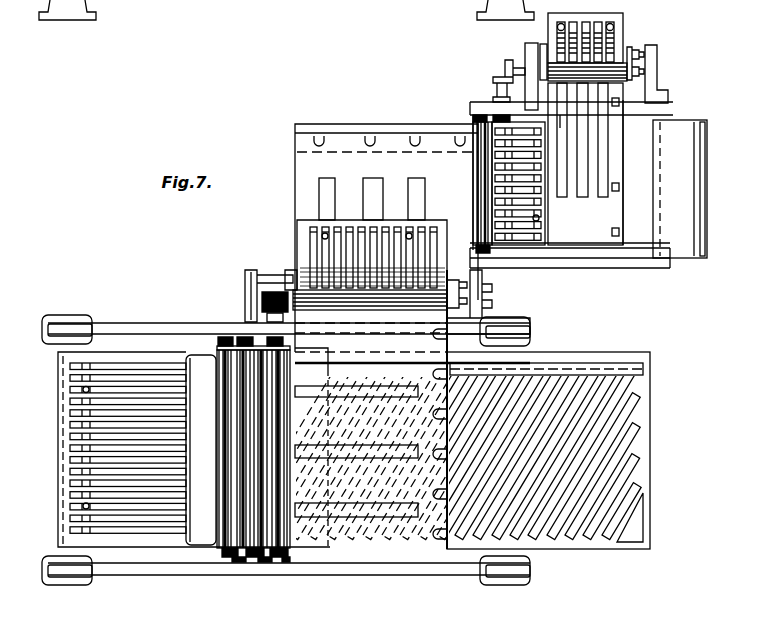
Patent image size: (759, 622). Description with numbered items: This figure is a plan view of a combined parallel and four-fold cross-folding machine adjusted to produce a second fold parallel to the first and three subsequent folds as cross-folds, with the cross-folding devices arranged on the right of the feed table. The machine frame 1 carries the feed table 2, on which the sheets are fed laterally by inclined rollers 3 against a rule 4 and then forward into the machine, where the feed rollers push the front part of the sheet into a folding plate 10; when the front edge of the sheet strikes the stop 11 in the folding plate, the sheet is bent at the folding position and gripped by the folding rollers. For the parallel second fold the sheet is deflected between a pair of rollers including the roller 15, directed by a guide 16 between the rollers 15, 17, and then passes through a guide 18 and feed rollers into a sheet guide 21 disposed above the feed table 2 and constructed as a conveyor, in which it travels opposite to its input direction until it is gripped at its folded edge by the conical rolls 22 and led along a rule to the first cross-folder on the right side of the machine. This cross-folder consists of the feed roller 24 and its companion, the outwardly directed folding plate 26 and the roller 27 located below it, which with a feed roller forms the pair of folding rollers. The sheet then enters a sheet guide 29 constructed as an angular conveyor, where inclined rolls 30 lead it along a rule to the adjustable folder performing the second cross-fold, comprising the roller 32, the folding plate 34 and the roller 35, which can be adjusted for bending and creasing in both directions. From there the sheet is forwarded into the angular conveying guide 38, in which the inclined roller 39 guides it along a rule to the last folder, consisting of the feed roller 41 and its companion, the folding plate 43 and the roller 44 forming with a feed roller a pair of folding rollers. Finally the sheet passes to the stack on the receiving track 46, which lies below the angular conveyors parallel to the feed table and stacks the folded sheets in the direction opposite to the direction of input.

The machine frame 1 is at (65, 322).
The feed table 2 is at (602, 545).
The inclined rollers 3 is at (636, 398).
The rule 4 is at (616, 372).
The folding plate 10 is at (66, 472).
The stop 11 is at (82, 412).
The roller 15 is at (240, 560).
The guide 16 is at (202, 370).
The roller 17 is at (229, 337).
The guide 18 is at (262, 532).
The sheet guide 21 is at (372, 548).
The conical rolls 22 is at (438, 527).
The feed roller 24 is at (296, 292).
The folding plate 26 is at (346, 226).
The roller 27 is at (316, 256).
The sheet guide 29 is at (306, 201).
The inclined rolls 30 is at (445, 138).
The roller 32 is at (482, 126).
The folding plate 34 is at (540, 232).
The roller 35 is at (512, 233).
The angular conveying guide 38 is at (588, 235).
The inclined roller 39 is at (619, 186).
The feed roller 41 is at (645, 75).
The folding plate 43 is at (618, 30).
The roller 44 is at (624, 52).
The receiving track 46 is at (666, 130).